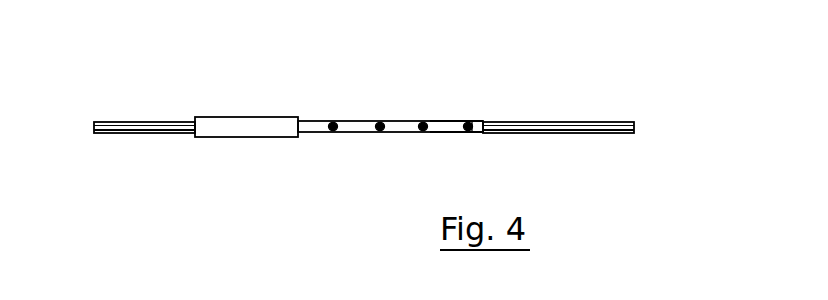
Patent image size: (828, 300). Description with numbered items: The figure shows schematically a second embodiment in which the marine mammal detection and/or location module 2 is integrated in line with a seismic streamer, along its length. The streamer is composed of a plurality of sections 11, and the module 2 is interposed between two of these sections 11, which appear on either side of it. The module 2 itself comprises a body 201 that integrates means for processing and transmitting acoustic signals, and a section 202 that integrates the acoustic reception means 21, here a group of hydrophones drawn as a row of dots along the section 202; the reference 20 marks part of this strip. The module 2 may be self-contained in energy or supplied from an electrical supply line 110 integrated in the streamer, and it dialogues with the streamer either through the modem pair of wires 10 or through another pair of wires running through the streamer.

The module 2 is at (375, 131).
The modem pair of wires 10 is at (602, 122).
The section 11 is at (375, 127).
The carrier strip 20 is at (452, 121).
The acoustic reception means 21 is at (423, 121).
The electrical supply line 110 is at (567, 134).
The body 201 is at (239, 137).
The section 202 is at (352, 137).